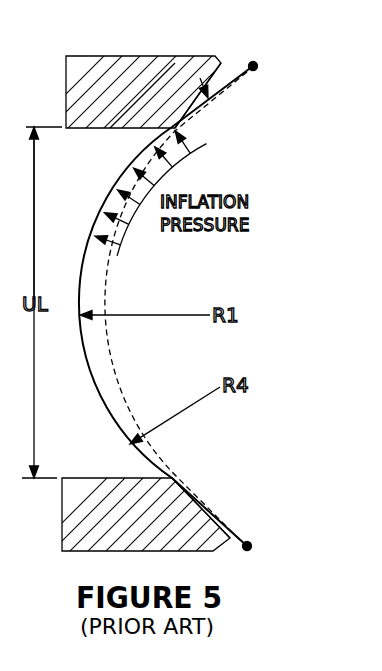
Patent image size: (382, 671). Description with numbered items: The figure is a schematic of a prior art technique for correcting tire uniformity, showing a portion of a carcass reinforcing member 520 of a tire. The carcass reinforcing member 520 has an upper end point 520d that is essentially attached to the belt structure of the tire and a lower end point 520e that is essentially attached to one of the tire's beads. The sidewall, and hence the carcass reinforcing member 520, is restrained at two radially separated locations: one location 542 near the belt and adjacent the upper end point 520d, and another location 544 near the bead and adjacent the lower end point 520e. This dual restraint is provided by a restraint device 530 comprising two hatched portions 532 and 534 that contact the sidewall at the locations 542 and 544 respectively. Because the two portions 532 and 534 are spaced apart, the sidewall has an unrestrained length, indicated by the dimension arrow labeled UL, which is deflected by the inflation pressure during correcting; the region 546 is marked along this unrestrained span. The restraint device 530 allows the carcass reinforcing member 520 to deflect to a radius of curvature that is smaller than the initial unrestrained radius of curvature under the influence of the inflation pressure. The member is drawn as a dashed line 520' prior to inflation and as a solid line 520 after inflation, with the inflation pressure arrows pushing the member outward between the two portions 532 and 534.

The restraint device 530 is at (130, 26).
The restraint device portion 532 is at (162, 85).
The restraint location near belt 542 is at (213, 73).
The upper end point 520d is at (257, 70).
The lower end point 520e is at (252, 545).
The unsupported length region 546 is at (35, 212).
The carcass reinforcing member 520 is at (166, 306).
The carcass reinforcing member prior to inflation 520' is at (176, 307).
The restraint location near bead 544 is at (213, 498).
The restraint device portion 534 is at (150, 545).